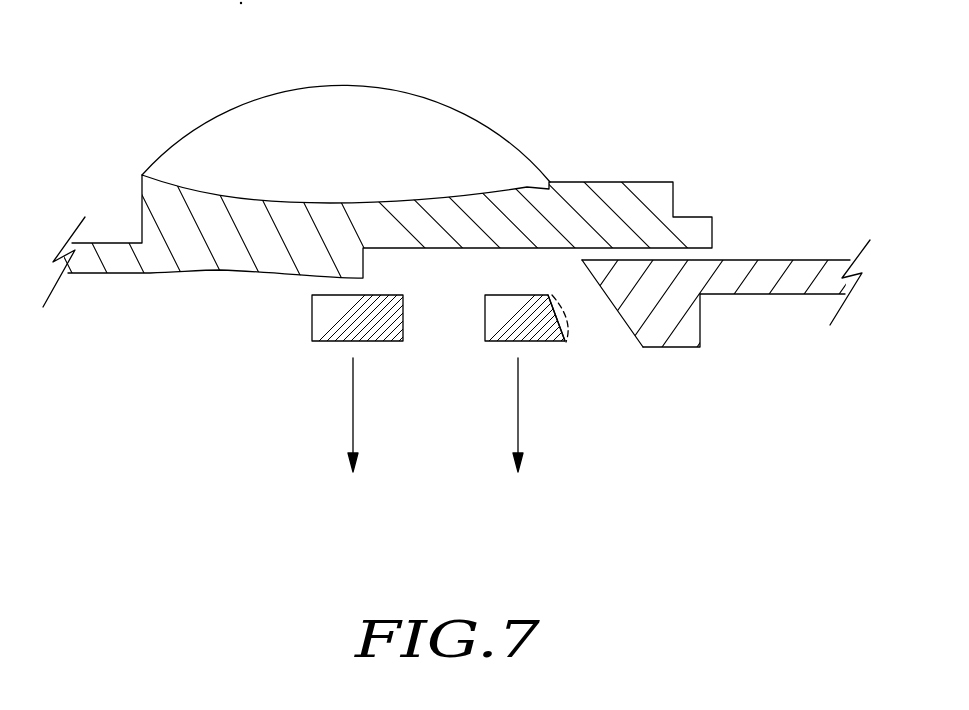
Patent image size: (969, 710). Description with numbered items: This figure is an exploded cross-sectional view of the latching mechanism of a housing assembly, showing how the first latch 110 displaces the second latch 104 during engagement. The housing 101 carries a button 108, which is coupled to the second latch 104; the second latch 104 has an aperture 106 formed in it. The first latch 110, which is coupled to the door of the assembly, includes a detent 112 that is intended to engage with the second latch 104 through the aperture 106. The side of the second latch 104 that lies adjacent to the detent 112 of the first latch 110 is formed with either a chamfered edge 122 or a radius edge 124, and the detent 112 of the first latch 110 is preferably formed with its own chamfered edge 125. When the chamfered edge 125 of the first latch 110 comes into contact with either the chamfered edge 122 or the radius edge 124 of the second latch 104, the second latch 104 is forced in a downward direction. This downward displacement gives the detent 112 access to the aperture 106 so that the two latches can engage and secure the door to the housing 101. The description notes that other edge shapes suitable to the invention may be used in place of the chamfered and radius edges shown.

The housing 101 is at (108, 240).
The second latch 104 is at (337, 342).
The aperture 106 is at (452, 338).
The button 108 is at (470, 120).
The first latch 110 is at (737, 263).
The detent 112 is at (702, 313).
The chamfered edge 122 is at (565, 318).
The radius edge 124 is at (553, 295).
The chamfered edge 125 is at (642, 345).